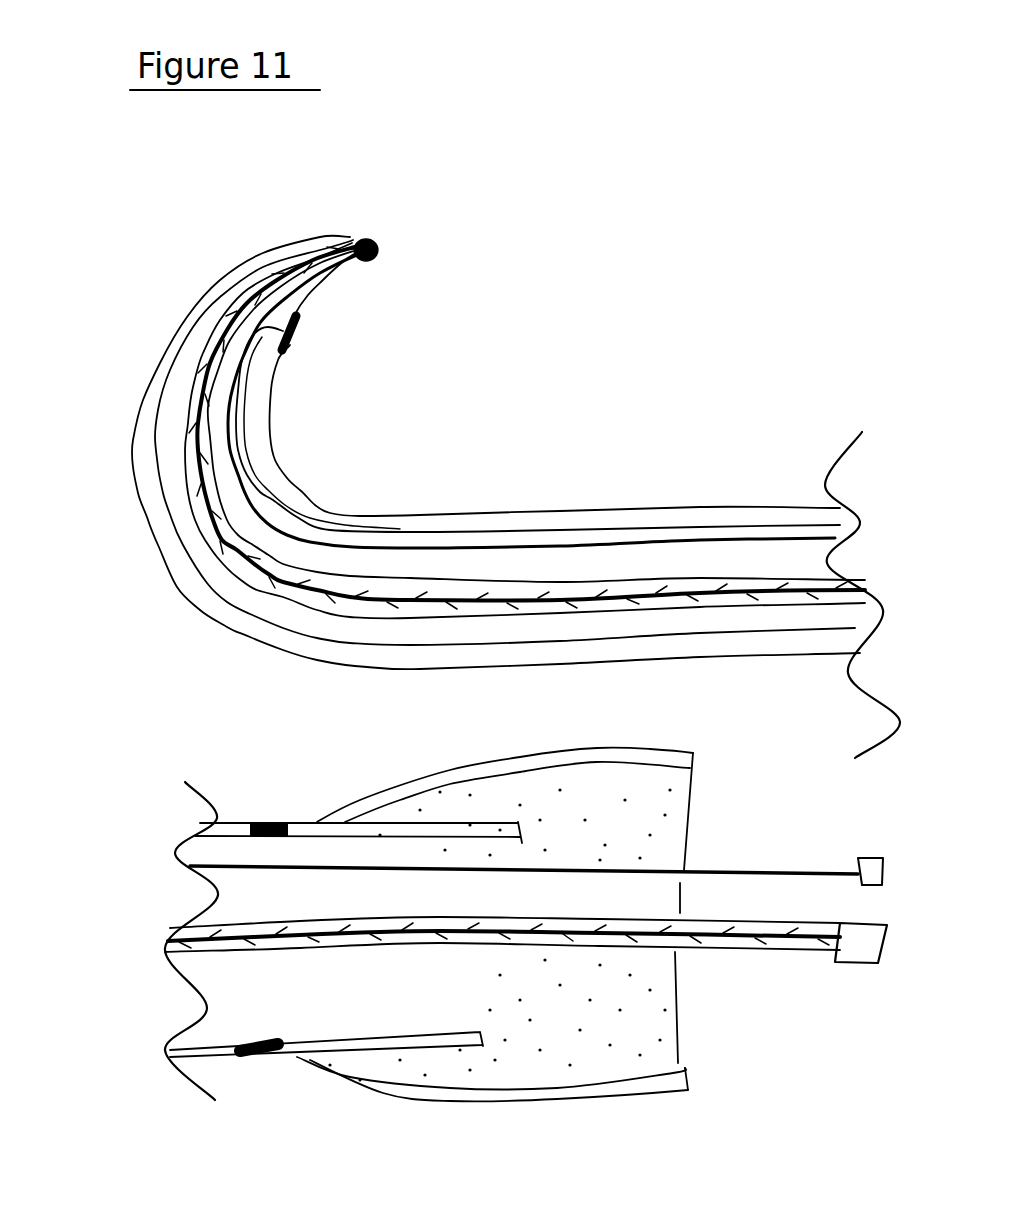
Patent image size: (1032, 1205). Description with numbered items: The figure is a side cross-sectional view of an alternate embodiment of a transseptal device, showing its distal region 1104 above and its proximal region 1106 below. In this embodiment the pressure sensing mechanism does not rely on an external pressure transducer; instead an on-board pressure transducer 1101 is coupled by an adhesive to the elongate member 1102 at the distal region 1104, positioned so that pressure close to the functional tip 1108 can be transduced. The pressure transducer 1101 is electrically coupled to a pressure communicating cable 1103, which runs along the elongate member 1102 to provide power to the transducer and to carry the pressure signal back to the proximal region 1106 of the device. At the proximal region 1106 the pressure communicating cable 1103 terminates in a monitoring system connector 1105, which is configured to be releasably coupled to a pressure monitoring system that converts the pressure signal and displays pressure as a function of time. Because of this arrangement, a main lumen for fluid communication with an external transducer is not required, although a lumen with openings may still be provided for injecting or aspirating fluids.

The distal region 1104 is at (592, 228).
The functional tip 1108 is at (378, 252).
The pressure transducer 1101 is at (296, 337).
The elongate member 1102 is at (640, 508).
The pressure communicating cable 1103 is at (757, 538).
The proximal region 1106 is at (167, 765).
The monitoring system connector 1105 is at (873, 858).